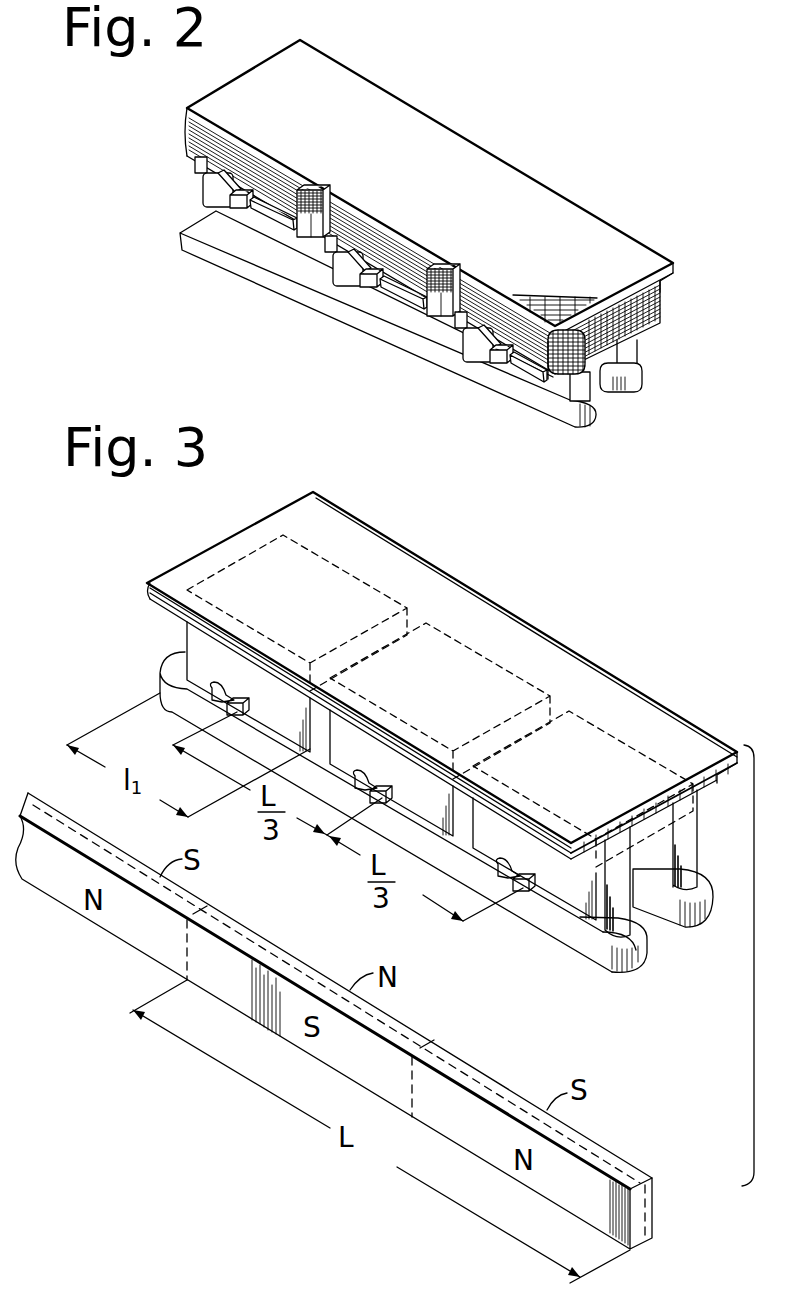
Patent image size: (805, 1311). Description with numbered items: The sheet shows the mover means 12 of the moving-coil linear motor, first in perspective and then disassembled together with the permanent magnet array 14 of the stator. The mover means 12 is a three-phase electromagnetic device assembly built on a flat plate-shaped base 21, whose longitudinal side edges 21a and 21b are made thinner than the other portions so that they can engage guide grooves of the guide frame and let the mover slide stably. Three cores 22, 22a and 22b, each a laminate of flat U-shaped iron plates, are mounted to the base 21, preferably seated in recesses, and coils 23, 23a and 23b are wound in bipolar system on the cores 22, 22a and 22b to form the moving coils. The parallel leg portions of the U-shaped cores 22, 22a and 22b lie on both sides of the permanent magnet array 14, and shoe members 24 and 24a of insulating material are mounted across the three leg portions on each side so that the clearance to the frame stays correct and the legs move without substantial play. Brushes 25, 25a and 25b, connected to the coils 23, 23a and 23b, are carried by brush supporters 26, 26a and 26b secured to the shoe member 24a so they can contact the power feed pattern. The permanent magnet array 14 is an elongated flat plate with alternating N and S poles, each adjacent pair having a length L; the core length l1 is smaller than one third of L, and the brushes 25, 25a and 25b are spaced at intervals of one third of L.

In FIG. 2, the mover means 12 is at (437, 275).
In FIG. 3, the mover means 12 is at (461, 732).
In FIG. 3, the permanent magnet array 14 is at (637, 1203).
In FIG. 2, the base 21 is at (452, 195).
In FIG. 3, the base 21 is at (215, 545).
In FIG. 2, the longitudinal side edge 21a is at (673, 277).
In FIG. 2, the longitudinal side edge 21b is at (557, 385).
In FIG. 2, the core 22 is at (308, 232).
In FIG. 3, the core 22 is at (383, 525).
In FIG. 2, the core 22a is at (412, 321).
In FIG. 3, the core 22a is at (525, 624).
In FIG. 2, the core 22b is at (594, 415).
In FIG. 3, the core 22b is at (683, 712).
In FIG. 2, the coil 23 is at (217, 147).
In FIG. 2, the coil 23a is at (295, 286).
In FIG. 2, the coil 23b is at (435, 368).
In FIG. 2, the shoe member 24 is at (637, 383).
In FIG. 2, the shoe member 24a is at (590, 407).
In FIG. 2, the brush 25 is at (240, 205).
In FIG. 2, the brush 25a is at (337, 293).
In FIG. 2, the brush 25b is at (476, 374).
In FIG. 2, the brush supporter 26 is at (252, 225).
In FIG. 2, the brush supporter 26a is at (365, 327).
In FIG. 2, the brush supporter 26b is at (509, 411).